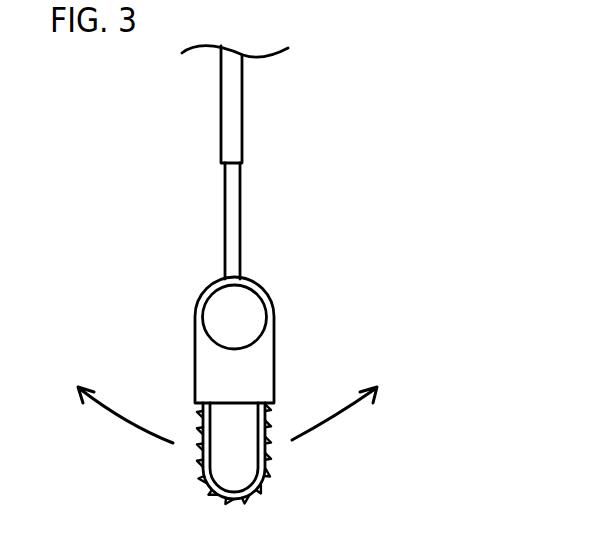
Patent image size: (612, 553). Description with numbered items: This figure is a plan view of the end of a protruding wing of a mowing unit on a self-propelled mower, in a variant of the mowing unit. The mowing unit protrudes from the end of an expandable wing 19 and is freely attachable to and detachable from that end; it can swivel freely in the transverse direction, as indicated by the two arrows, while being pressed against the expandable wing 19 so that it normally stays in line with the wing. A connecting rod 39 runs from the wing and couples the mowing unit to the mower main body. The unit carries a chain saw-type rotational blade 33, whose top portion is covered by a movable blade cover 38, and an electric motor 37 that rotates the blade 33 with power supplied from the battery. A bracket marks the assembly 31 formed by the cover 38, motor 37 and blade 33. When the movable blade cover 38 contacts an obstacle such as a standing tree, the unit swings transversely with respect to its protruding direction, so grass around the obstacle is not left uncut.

The expandable wing 19 is at (233, 82).
The connecting rod 39 is at (233, 226).
The saw unit 31 is at (299, 355).
The movable blade cover 38 is at (195, 348).
The electric motor 37 is at (247, 318).
The chain saw-type rotational blade 33 is at (308, 453).